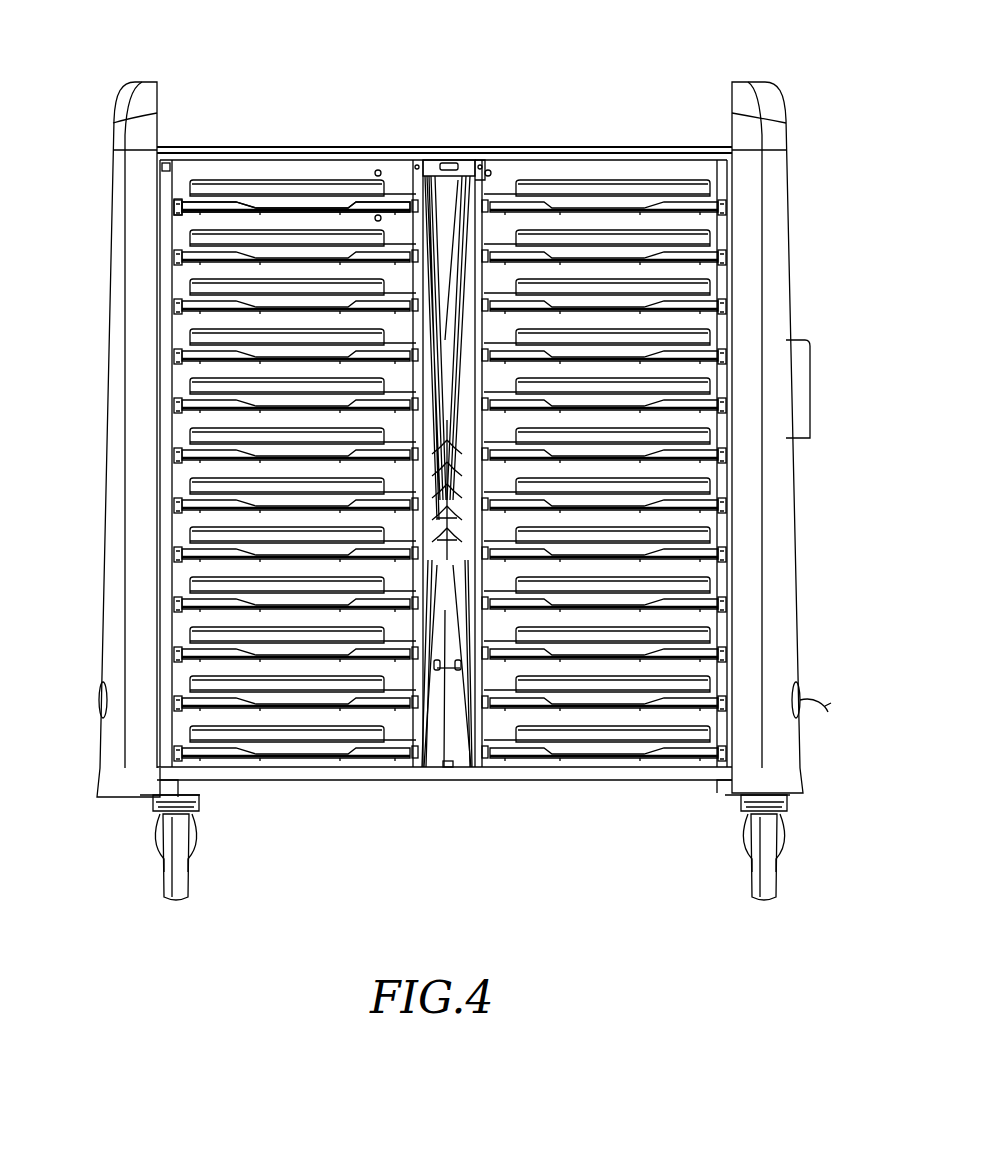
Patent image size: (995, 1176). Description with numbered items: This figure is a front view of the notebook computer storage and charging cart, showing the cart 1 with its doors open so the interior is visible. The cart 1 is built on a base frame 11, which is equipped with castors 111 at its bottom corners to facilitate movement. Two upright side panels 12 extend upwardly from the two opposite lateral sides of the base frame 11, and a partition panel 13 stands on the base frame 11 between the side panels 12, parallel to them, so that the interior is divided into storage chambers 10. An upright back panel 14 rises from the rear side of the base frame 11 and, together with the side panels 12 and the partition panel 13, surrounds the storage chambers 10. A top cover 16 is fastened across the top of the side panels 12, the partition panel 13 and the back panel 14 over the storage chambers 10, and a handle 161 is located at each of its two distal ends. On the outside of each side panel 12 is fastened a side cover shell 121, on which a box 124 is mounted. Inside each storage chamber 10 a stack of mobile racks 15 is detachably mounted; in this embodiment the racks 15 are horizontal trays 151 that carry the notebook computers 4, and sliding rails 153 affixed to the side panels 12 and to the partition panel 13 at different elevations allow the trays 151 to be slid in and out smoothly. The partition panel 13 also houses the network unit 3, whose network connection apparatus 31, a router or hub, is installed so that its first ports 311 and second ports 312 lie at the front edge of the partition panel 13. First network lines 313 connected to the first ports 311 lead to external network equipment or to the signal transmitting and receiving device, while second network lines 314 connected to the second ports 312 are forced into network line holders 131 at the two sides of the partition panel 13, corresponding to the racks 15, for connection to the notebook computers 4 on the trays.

The cart 1 is at (443, 454).
The storage chambers 10 is at (190, 225).
The base frame 11 is at (328, 775).
The castors 111 is at (176, 878).
The upright side panels 12 is at (165, 188).
The side cover shells 121 is at (122, 280).
The box 124 is at (798, 415).
The partition panel 13 is at (430, 163).
The network line holders 131 is at (478, 176).
The upright back panel 14 is at (573, 173).
The mobile racks 15 is at (296, 148).
The horizontal trays 151 is at (370, 204).
The sliding rails 153 is at (177, 207).
The top cover 16 is at (610, 150).
The handle 161 is at (732, 105).
The network unit 3 is at (279, 497).
The network connection apparatus 31 is at (444, 766).
The first ports 311 is at (447, 388).
The second ports 312 is at (452, 480).
The first network lines 313 is at (450, 336).
The second network lines 314 is at (430, 542).
The notebook computers 4 is at (622, 738).